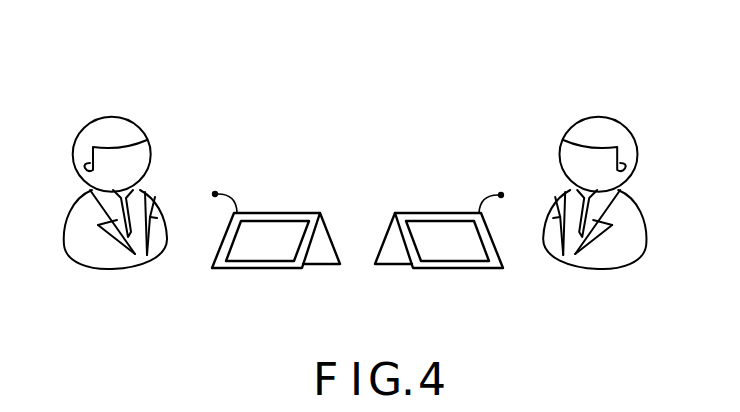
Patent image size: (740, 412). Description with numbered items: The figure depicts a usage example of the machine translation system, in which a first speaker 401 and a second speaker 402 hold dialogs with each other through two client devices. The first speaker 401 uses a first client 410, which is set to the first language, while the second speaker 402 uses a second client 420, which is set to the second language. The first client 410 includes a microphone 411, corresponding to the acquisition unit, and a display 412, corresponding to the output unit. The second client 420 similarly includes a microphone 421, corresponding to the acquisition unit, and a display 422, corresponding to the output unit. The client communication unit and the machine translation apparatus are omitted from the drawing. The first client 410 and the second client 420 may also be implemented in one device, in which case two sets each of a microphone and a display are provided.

The first speaker 401 is at (108, 116).
The second speaker 402 is at (595, 116).
The first client 410 is at (297, 212).
The microphone 411 is at (238, 212).
The display 412 is at (263, 252).
The second client 420 is at (410, 212).
The microphone 421 is at (478, 213).
The display 422 is at (457, 253).